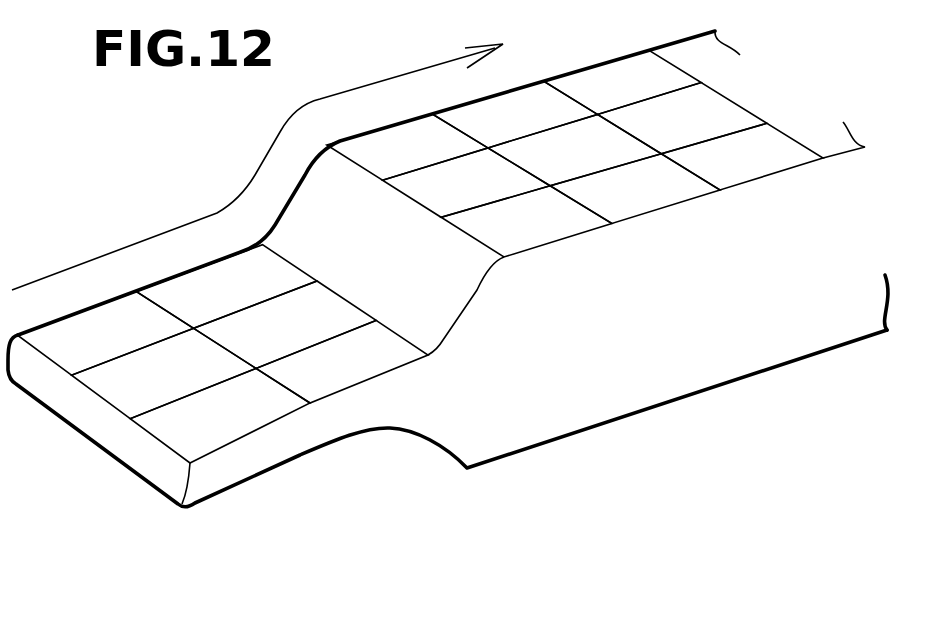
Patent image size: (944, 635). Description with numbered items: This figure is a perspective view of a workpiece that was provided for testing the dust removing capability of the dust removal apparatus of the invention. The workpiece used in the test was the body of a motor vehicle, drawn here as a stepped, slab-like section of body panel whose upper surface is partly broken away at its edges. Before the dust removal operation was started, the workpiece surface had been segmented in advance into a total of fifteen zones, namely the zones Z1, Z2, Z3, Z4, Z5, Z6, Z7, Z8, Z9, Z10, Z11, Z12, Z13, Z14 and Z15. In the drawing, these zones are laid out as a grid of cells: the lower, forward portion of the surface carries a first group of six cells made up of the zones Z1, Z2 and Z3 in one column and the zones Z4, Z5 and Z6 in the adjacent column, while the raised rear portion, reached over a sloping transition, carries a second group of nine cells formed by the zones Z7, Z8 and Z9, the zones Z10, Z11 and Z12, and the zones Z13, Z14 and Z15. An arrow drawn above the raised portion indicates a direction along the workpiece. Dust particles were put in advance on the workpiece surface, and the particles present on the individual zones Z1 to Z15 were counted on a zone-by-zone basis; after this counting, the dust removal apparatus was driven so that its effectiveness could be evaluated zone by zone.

The zone Z1 is at (106, 333).
The zone Z2 is at (164, 373).
The zone Z3 is at (220, 415).
The zone Z4 is at (226, 287).
The zone Z5 is at (285, 324).
The zone Z6 is at (342, 361).
The zone Z7 is at (407, 147).
The zone Z8 is at (467, 182).
The zone Z9 is at (526, 221).
The zone Z10 is at (514, 114).
The zone Z11 is at (574, 149).
The zone Z12 is at (635, 189).
The zone Z13 is at (622, 82).
The zone Z14 is at (682, 118).
The zone Z15 is at (742, 156).